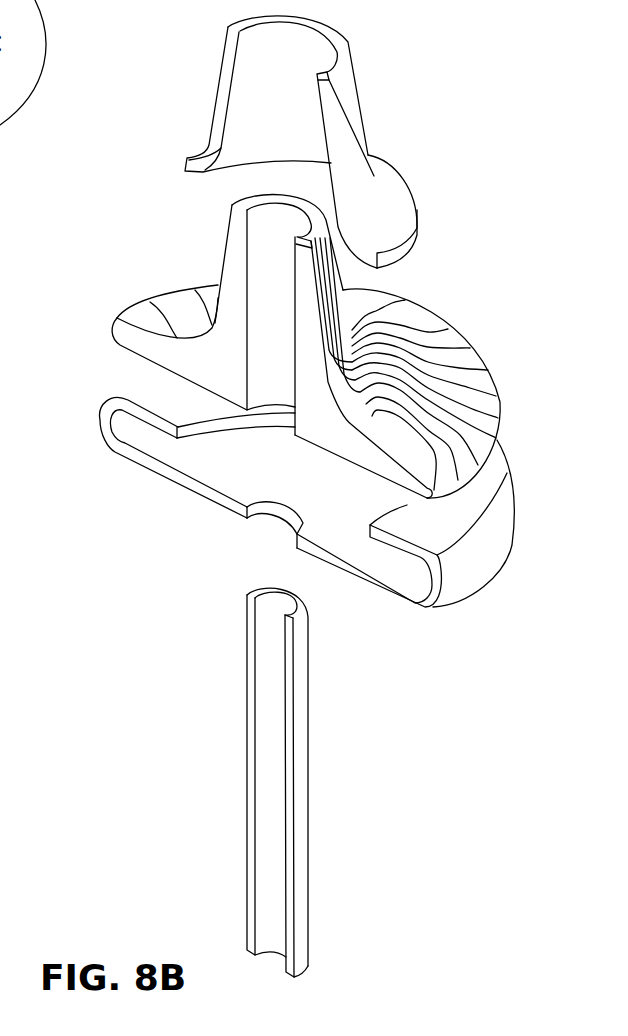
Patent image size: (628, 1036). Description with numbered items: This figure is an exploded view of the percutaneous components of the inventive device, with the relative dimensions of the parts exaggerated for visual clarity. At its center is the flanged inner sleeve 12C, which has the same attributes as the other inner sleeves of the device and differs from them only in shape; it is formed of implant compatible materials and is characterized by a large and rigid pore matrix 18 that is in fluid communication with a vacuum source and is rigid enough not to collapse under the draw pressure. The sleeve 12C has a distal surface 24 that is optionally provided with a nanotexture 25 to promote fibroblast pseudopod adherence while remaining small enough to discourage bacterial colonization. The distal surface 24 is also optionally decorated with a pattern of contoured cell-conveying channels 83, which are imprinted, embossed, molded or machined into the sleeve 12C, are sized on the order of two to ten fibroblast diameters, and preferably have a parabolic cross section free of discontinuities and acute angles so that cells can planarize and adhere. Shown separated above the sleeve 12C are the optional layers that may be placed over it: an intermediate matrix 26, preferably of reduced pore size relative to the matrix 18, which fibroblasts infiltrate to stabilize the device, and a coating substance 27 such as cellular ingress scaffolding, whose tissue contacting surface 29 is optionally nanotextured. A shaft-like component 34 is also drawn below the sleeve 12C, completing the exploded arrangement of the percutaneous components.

The flanged inner sleeve 12C is at (271, 347).
The porous matrix 18 is at (167, 356).
The distal surface 24 is at (450, 336).
The nanotexture 25 is at (482, 373).
The intermediate matrix 26 is at (293, 142).
The coating substance 27 is at (401, 205).
The tissue contacting surface 29 is at (363, 93).
The shaft 34 is at (278, 772).
The cell-conveying channels 83 is at (150, 302).